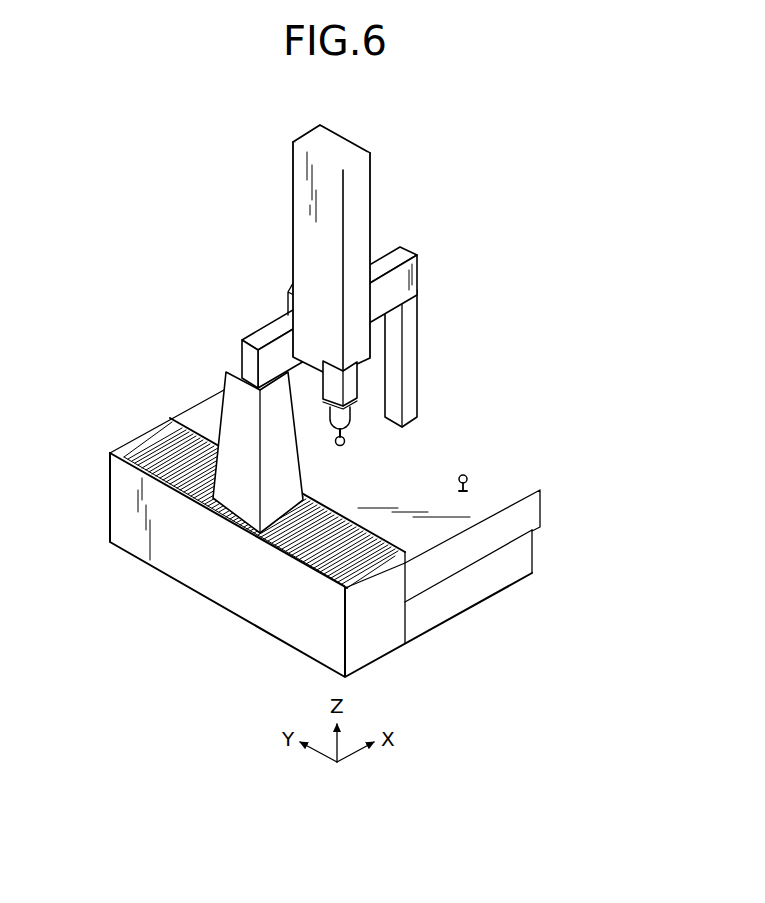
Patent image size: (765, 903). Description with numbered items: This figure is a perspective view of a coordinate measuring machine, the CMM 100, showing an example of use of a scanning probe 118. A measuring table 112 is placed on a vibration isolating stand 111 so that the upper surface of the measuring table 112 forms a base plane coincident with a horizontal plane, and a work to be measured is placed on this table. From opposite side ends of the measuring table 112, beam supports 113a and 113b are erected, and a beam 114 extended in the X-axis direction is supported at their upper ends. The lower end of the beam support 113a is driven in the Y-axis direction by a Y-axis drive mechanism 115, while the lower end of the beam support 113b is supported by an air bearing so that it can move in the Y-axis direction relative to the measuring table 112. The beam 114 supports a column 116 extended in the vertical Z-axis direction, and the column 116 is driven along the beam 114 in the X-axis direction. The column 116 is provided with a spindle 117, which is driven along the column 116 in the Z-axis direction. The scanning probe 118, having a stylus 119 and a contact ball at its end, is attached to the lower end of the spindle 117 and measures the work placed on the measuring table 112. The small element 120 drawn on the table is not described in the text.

The CMM 100 is at (494, 229).
The vibration isolating stand 111 is at (531, 551).
The measuring table 112 is at (514, 487).
The beam support 113a is at (230, 393).
The beam support 113b is at (420, 348).
The beam 114 is at (388, 254).
The Y-axis drive mechanism 115 is at (158, 448).
The column 116 is at (306, 216).
The spindle 117 is at (348, 377).
The scanning probe 118 is at (351, 421).
The stylus 119 is at (342, 447).
The reference sphere 120 is at (466, 474).